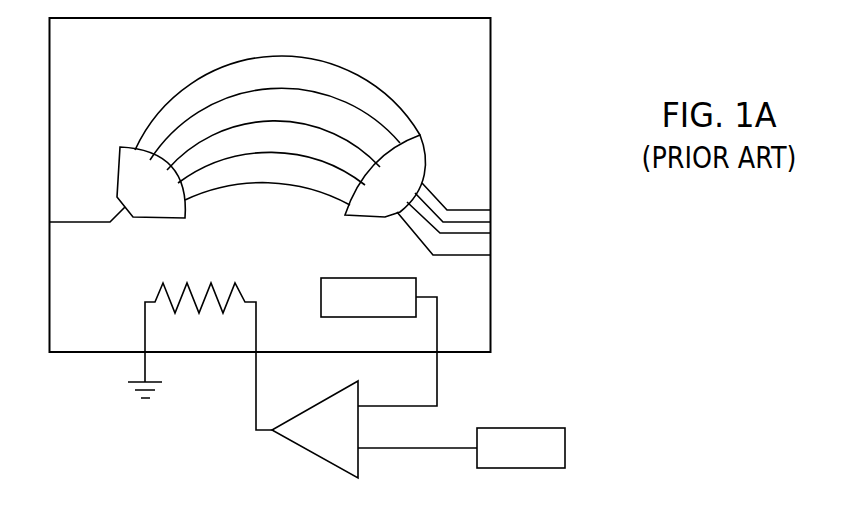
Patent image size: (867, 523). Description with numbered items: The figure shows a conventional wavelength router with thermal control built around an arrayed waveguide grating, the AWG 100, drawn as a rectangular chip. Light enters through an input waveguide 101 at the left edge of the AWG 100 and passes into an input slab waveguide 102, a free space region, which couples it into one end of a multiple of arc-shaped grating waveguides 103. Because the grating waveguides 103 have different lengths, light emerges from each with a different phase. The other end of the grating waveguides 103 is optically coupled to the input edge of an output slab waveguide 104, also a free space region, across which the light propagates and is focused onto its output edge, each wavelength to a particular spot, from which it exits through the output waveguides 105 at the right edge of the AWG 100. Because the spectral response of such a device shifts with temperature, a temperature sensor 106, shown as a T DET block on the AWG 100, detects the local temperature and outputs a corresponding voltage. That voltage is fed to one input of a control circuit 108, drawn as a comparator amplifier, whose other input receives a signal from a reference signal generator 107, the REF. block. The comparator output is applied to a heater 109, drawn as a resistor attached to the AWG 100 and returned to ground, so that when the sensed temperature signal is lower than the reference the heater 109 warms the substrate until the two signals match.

The arrayed waveguide grating (AWG) 100 is at (490, 44).
The input waveguide 101 is at (70, 222).
The input slab waveguide 102 is at (118, 163).
The grating waveguides 103 is at (194, 85).
The output slab waveguide 104 is at (428, 163).
The output waveguide 105 is at (490, 231).
The temperature sensor 106 is at (336, 278).
The reference signal generator 107 is at (533, 428).
The control circuit (comparator) 108 is at (300, 447).
The heater 109 is at (196, 286).